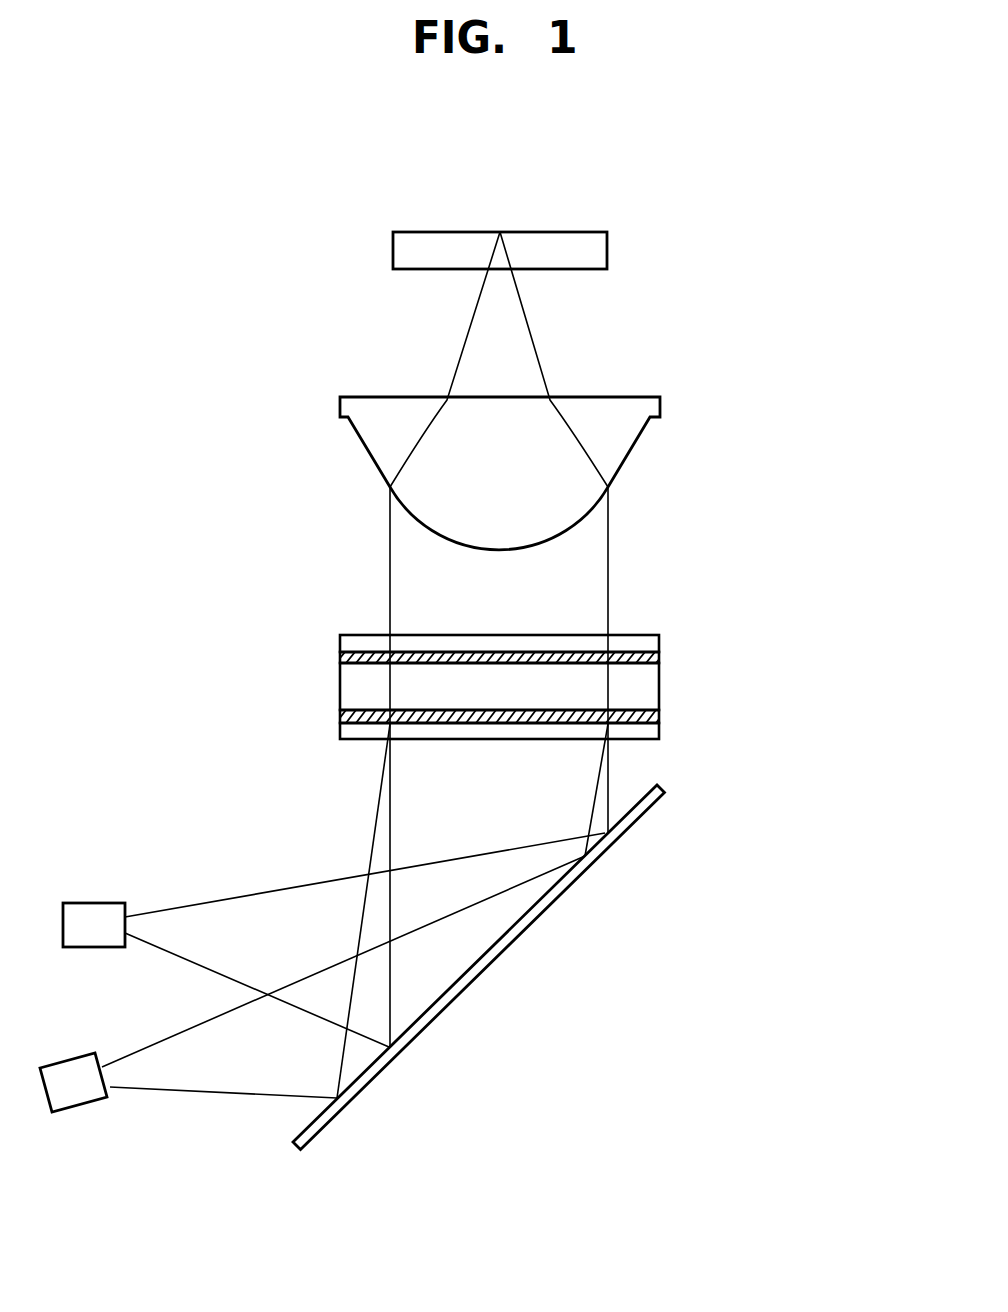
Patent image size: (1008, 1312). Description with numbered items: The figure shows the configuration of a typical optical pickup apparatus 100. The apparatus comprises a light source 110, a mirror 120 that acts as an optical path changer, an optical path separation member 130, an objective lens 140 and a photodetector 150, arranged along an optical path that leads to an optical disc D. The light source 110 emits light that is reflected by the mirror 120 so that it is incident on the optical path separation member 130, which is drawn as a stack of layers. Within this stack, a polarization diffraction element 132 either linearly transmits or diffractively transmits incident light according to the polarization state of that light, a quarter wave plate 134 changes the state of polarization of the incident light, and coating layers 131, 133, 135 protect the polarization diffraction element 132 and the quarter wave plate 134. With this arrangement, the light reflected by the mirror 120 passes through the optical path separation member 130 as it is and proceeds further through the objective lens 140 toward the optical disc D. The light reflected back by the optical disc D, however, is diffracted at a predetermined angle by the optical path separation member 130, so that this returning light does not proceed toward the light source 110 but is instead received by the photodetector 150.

The optical pickup apparatus 100 is at (478, 1190).
The light source 110 is at (88, 903).
The mirror 120 is at (558, 893).
The optical path separation member 130 is at (595, 680).
The coating layer 131 is at (547, 749).
The polarization diffraction element 132 is at (658, 718).
The coating layer 133 is at (650, 688).
The quarter wave plate 134 is at (660, 653).
The coating layer 135 is at (665, 632).
The objective lens 140 is at (628, 427).
The photodetector 150 is at (78, 1109).
The optical disc D is at (607, 248).